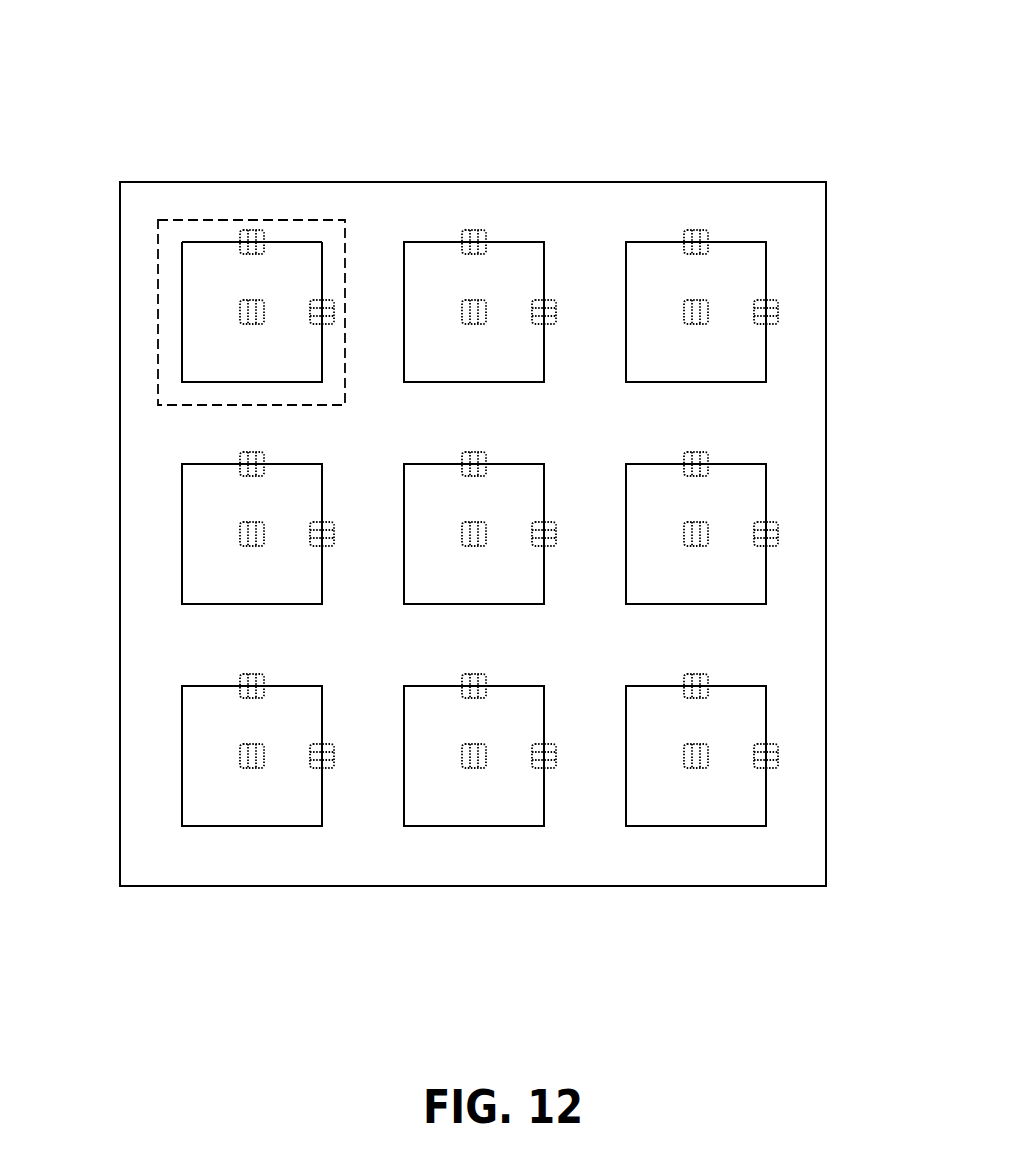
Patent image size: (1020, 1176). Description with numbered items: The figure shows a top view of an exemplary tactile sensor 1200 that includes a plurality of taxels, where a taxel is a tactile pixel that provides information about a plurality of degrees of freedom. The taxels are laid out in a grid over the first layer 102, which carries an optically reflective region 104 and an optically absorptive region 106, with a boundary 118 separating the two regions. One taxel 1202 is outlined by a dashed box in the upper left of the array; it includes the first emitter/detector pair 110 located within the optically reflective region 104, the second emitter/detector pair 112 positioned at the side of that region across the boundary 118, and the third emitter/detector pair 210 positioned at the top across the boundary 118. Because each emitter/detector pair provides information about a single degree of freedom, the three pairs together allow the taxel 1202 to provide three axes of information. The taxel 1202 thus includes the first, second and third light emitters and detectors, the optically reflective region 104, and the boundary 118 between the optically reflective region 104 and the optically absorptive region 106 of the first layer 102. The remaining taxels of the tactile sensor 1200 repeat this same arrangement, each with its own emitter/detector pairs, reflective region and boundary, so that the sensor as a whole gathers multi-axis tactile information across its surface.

The tactile sensor 1200 is at (660, 60).
The first layer 102 is at (500, 182).
The optically absorptive region 106 is at (640, 202).
The optically reflective region 104 is at (199, 279).
The boundary 118 is at (213, 242).
The third emitter/detector pair 210 is at (252, 230).
The taxel 1202 is at (291, 218).
The first emitter/detector pair 110 is at (240, 312).
The second emitter/detector pair 112 is at (332, 307).